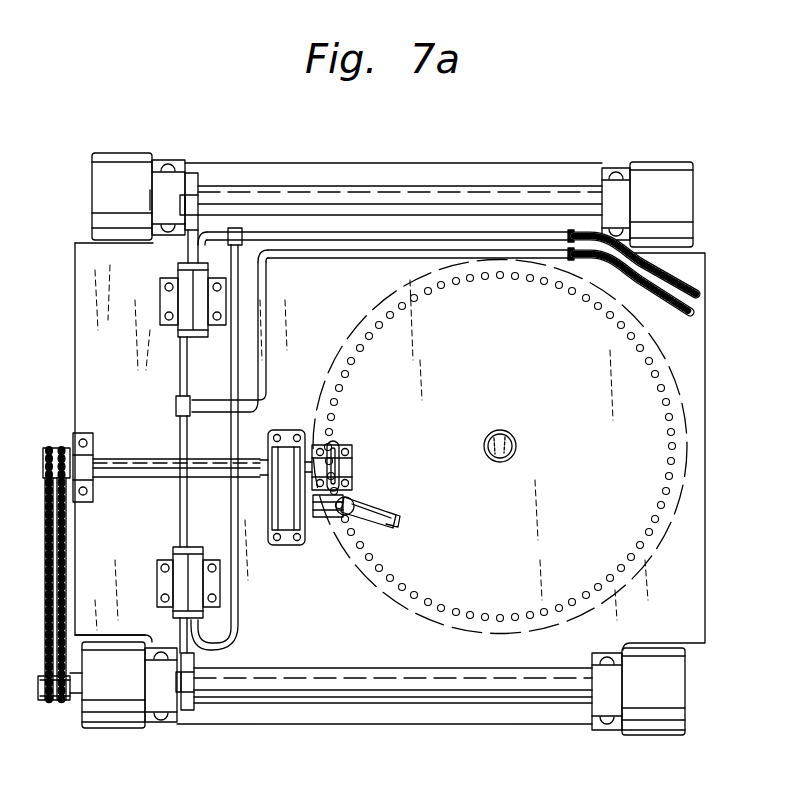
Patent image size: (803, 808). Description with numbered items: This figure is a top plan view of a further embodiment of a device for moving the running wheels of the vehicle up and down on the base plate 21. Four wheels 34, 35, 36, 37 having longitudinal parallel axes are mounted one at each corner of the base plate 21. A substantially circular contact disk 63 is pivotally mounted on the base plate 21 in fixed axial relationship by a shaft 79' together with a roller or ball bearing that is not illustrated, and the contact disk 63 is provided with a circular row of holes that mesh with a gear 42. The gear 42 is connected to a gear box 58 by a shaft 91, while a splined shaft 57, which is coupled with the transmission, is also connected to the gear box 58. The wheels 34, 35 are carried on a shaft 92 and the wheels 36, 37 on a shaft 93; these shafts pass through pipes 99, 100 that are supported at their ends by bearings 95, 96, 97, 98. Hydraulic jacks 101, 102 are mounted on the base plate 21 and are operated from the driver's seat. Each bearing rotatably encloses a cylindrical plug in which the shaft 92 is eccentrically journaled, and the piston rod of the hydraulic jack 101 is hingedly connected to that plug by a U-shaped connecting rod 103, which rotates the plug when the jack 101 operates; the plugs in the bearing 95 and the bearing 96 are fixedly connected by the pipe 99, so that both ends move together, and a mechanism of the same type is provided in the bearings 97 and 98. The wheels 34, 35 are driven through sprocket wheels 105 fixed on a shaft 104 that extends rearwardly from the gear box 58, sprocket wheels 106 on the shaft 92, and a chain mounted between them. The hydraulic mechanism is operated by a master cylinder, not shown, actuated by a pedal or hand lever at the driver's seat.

The base plate 21 is at (697, 620).
The wheel 34 is at (664, 701).
The wheel 35 is at (122, 694).
The wheel 36 is at (132, 207).
The wheel 37 is at (671, 214).
The gear 42 is at (335, 452).
The splined shaft 57 is at (397, 515).
The gear box 58 is at (298, 501).
The contact disk 63 is at (664, 438).
The shaft 79' is at (523, 446).
The shaft 91 is at (306, 467).
The shaft 92 is at (80, 642).
The shaft 93 is at (152, 200).
The bearing 95 is at (163, 708).
The bearing 96 is at (595, 718).
The bearing 97 is at (178, 182).
The bearing 98 is at (624, 192).
The pipe 99 is at (295, 700).
The pipe 100 is at (577, 193).
The hydraulic jack 101 is at (180, 566).
The hydraulic jack 102 is at (181, 323).
The U-shaped connecting rod 103 is at (198, 192).
The shaft 104 is at (123, 461).
The sprocket wheels 105 is at (52, 456).
The sprocket wheels 106 is at (52, 702).